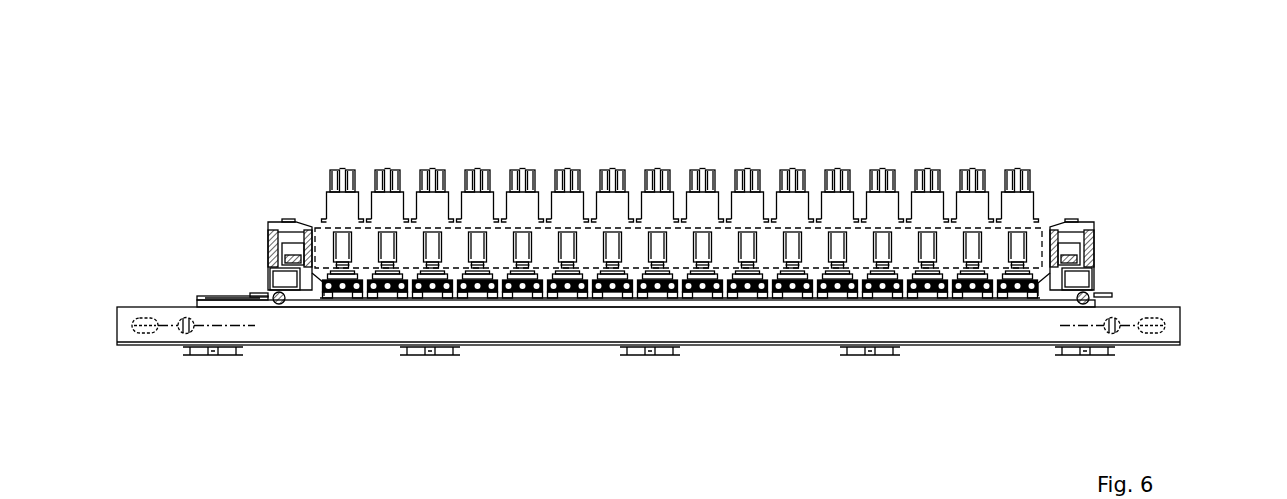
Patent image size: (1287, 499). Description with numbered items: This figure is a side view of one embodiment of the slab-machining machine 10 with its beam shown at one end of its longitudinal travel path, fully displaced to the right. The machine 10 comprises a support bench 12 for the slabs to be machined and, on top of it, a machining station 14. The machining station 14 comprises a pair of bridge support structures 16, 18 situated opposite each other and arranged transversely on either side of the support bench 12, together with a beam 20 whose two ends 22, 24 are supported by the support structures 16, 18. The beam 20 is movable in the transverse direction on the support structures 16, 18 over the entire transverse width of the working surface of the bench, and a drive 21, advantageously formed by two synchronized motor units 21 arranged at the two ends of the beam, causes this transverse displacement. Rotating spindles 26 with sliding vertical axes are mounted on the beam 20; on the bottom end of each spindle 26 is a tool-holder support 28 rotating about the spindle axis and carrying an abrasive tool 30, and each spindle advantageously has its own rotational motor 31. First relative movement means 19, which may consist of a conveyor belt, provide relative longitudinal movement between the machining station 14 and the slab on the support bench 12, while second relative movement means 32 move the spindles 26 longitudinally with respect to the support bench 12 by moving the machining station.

The machine 10 is at (1053, 145).
The support bench 12 is at (1183, 313).
The machining station 14 is at (547, 168).
The bridge support structure 16 is at (267, 232).
The bridge support structure 18 is at (1093, 232).
The first relative movement means 19 is at (543, 309).
The beam 20 is at (318, 225).
The drive 21 is at (276, 217).
The end of the beam 22 is at (320, 253).
The end of the beam 24 is at (1042, 252).
The rotating spindle 26 is at (984, 247).
The tool-holder support 28 is at (953, 273).
The abrasive tool 30 is at (947, 295).
The rotational motor 31 is at (668, 177).
The second relative movement means 32 is at (190, 296).